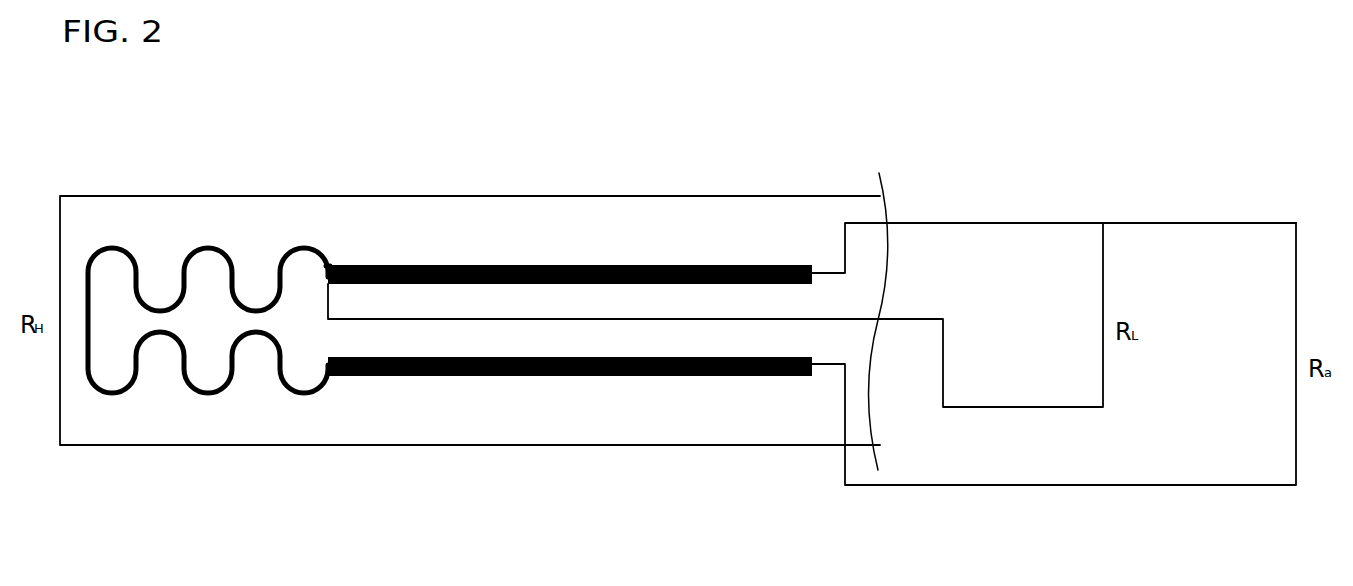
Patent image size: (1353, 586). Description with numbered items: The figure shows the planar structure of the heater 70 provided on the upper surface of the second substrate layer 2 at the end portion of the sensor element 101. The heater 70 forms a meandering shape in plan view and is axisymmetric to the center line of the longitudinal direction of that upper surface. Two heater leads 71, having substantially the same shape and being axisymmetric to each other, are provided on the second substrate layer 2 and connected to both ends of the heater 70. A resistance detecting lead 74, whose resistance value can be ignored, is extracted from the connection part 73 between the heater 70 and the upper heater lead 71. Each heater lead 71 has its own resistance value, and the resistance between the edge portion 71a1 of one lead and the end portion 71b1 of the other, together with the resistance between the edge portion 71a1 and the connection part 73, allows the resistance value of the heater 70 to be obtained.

The second substrate layer 2 is at (470, 283).
The sensor element 101 is at (680, 196).
The heater 70 is at (209, 247).
The connection part 73 is at (332, 257).
The heater leads 71 is at (460, 264).
The edge portion of heater lead 71a 71a1 is at (818, 264).
The end portion of heater lead 71b 71b1 is at (816, 377).
The resistance detecting lead 74 is at (945, 363).